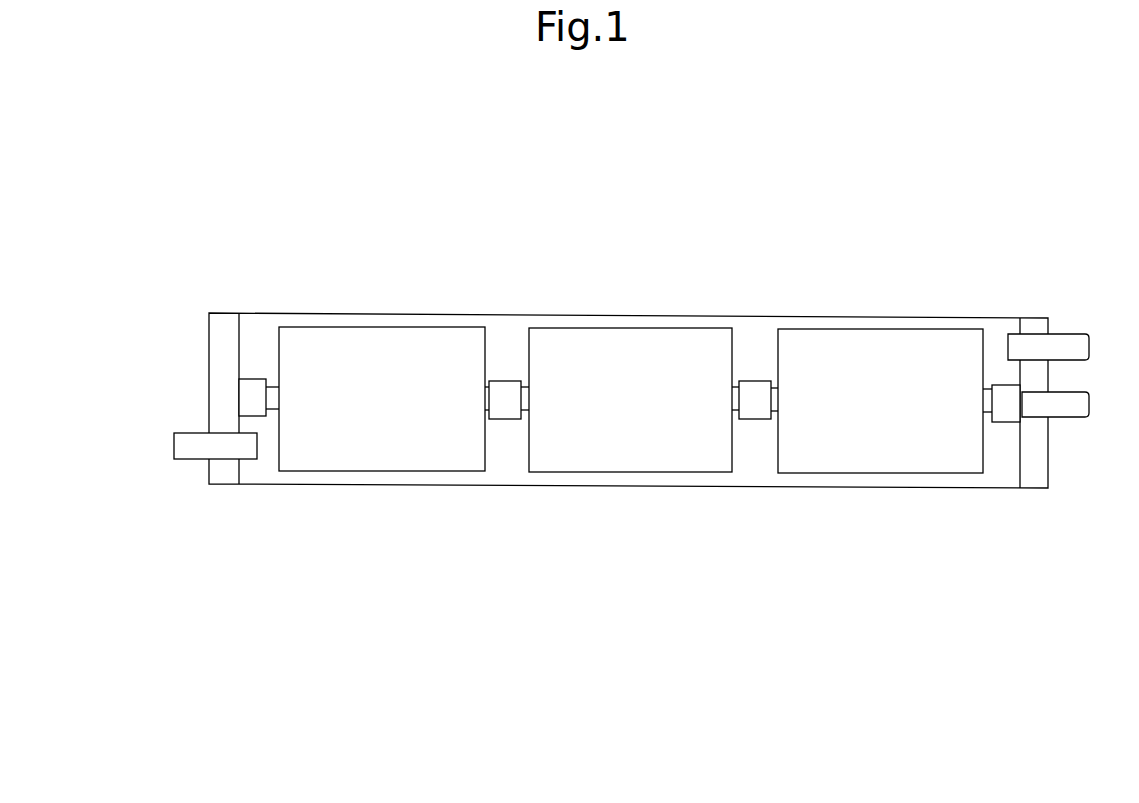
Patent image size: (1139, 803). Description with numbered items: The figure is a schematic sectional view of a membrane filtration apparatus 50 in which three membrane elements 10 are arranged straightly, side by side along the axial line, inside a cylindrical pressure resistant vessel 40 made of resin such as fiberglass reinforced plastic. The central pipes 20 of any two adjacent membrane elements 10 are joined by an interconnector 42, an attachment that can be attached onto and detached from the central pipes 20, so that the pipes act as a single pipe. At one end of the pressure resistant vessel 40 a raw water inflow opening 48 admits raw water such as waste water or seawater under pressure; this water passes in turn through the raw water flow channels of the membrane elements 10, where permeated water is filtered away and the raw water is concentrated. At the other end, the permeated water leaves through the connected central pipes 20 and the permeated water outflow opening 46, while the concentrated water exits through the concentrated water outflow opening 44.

The membrane element 10 is at (407, 472).
The central pipe 20 is at (272, 388).
The pressure resistant vessel 40 is at (1002, 477).
The interconnector 42 is at (505, 420).
The concentrated water outflow opening 44 is at (1073, 334).
The permeated water outflow opening 46 is at (1068, 403).
The raw water inflow opening 48 is at (192, 431).
The membrane filtration apparatus 50 is at (643, 286).